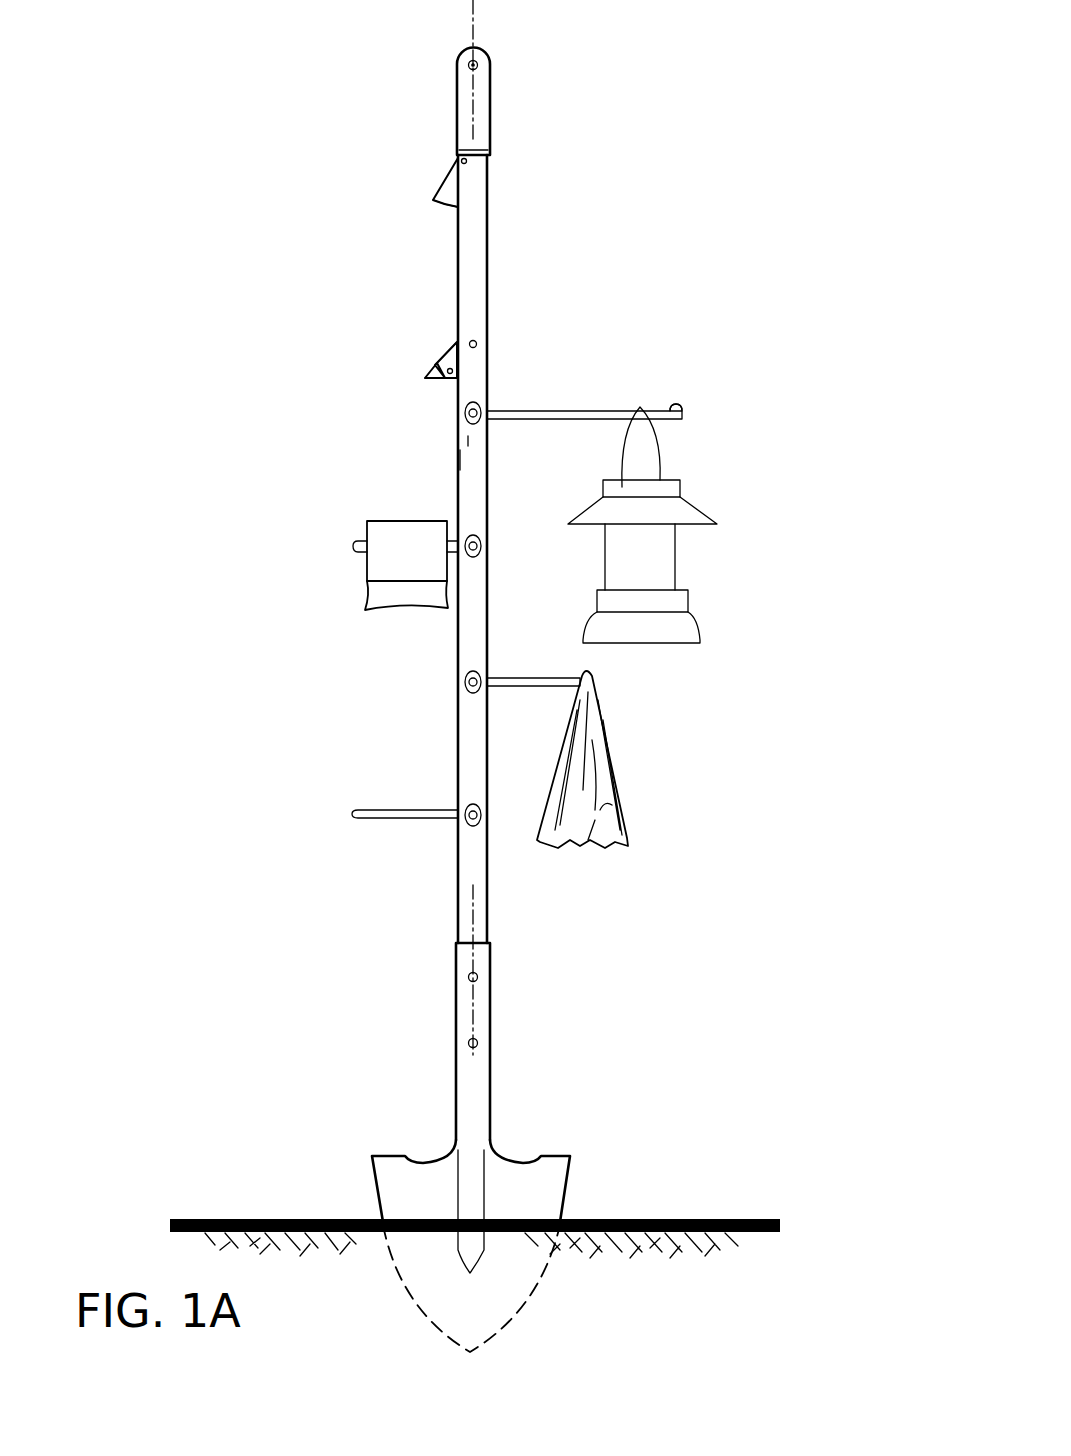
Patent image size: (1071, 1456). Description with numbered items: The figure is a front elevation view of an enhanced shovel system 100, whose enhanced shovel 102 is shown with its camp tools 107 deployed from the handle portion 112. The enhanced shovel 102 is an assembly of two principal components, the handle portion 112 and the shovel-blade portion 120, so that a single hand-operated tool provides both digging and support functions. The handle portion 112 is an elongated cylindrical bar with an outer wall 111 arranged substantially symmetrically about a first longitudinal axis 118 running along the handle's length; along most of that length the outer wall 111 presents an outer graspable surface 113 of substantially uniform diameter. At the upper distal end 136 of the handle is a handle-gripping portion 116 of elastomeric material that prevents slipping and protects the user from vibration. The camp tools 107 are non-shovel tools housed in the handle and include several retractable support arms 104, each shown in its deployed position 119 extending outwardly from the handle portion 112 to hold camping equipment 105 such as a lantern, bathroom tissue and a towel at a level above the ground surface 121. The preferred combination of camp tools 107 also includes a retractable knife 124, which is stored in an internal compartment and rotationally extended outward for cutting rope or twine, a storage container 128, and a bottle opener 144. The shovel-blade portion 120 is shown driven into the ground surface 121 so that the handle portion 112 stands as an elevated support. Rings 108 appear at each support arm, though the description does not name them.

The enhanced shovel system 100 is at (240, 88).
The enhanced shovel 102 is at (200, 198).
The retractable support arm 104 is at (530, 410).
The camping equipment 105 is at (370, 570).
The camp tool 107 is at (418, 162).
The hook ring 108 is at (478, 405).
The outer wall 111 is at (468, 440).
The handle portion 112 is at (505, 236).
The outer graspable surface 113 is at (470, 462).
The handle-gripping portion 116 is at (462, 68).
The first longitudinal axis 118 is at (478, 22).
The deployed position 119 is at (775, 348).
The shovel-blade portion 120 is at (555, 1125).
The ground surface 121 is at (630, 1220).
The retractable knife 124 is at (455, 338).
The storage container 128 is at (455, 198).
The upper distal end 136 is at (515, 83).
The bottle opener 144 is at (490, 178).